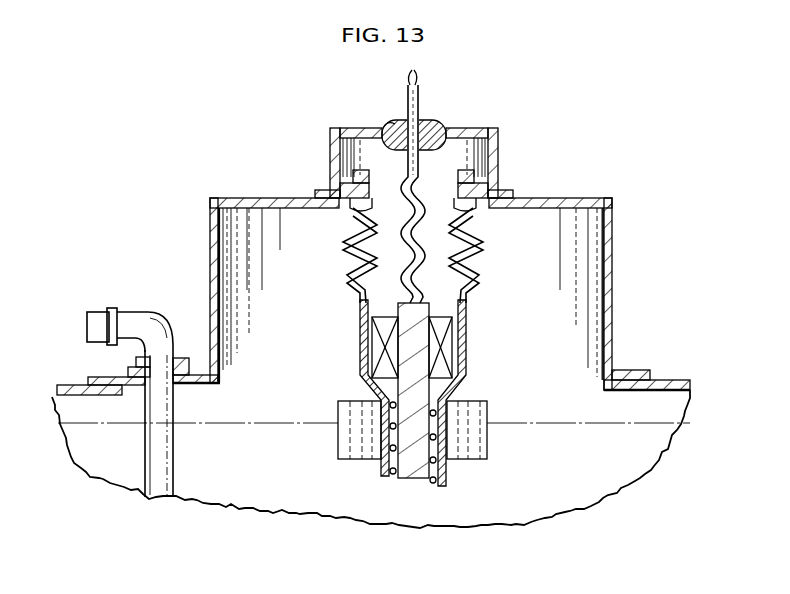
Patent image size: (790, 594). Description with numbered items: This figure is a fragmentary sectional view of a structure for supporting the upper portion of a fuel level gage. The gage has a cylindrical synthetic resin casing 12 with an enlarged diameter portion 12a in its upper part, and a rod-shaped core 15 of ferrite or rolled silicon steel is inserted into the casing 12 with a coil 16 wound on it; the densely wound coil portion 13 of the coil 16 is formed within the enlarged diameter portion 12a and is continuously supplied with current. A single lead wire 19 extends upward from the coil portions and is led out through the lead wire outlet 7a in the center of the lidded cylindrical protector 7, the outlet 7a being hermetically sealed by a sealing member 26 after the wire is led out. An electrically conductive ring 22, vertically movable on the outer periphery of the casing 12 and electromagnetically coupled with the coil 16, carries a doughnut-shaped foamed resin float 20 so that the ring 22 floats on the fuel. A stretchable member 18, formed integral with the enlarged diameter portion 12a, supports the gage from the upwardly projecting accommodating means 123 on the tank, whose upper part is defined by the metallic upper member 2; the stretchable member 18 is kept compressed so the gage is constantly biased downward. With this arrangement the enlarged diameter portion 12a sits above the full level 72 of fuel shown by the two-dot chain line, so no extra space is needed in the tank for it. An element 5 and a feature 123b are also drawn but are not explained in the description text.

The upper member 2 is at (613, 369).
The pipe 5 is at (169, 445).
The protector 7 is at (345, 129).
The lead wire outlet 7a is at (395, 128).
The casing 12 is at (360, 352).
The enlarged diameter portion 12a is at (362, 333).
The densely wound coil portion 13 is at (452, 355).
The core 15 is at (406, 473).
The coil 16 is at (429, 471).
The stretchable member 18 is at (357, 286).
The lead wire 19 is at (418, 115).
The float 20 is at (485, 459).
The electrically conductive ring 22 is at (458, 456).
The sealing member 26 is at (440, 125).
The full level 72 is at (526, 423).
The accommodating means 123 is at (212, 279).
The housing neck 123b is at (346, 218).